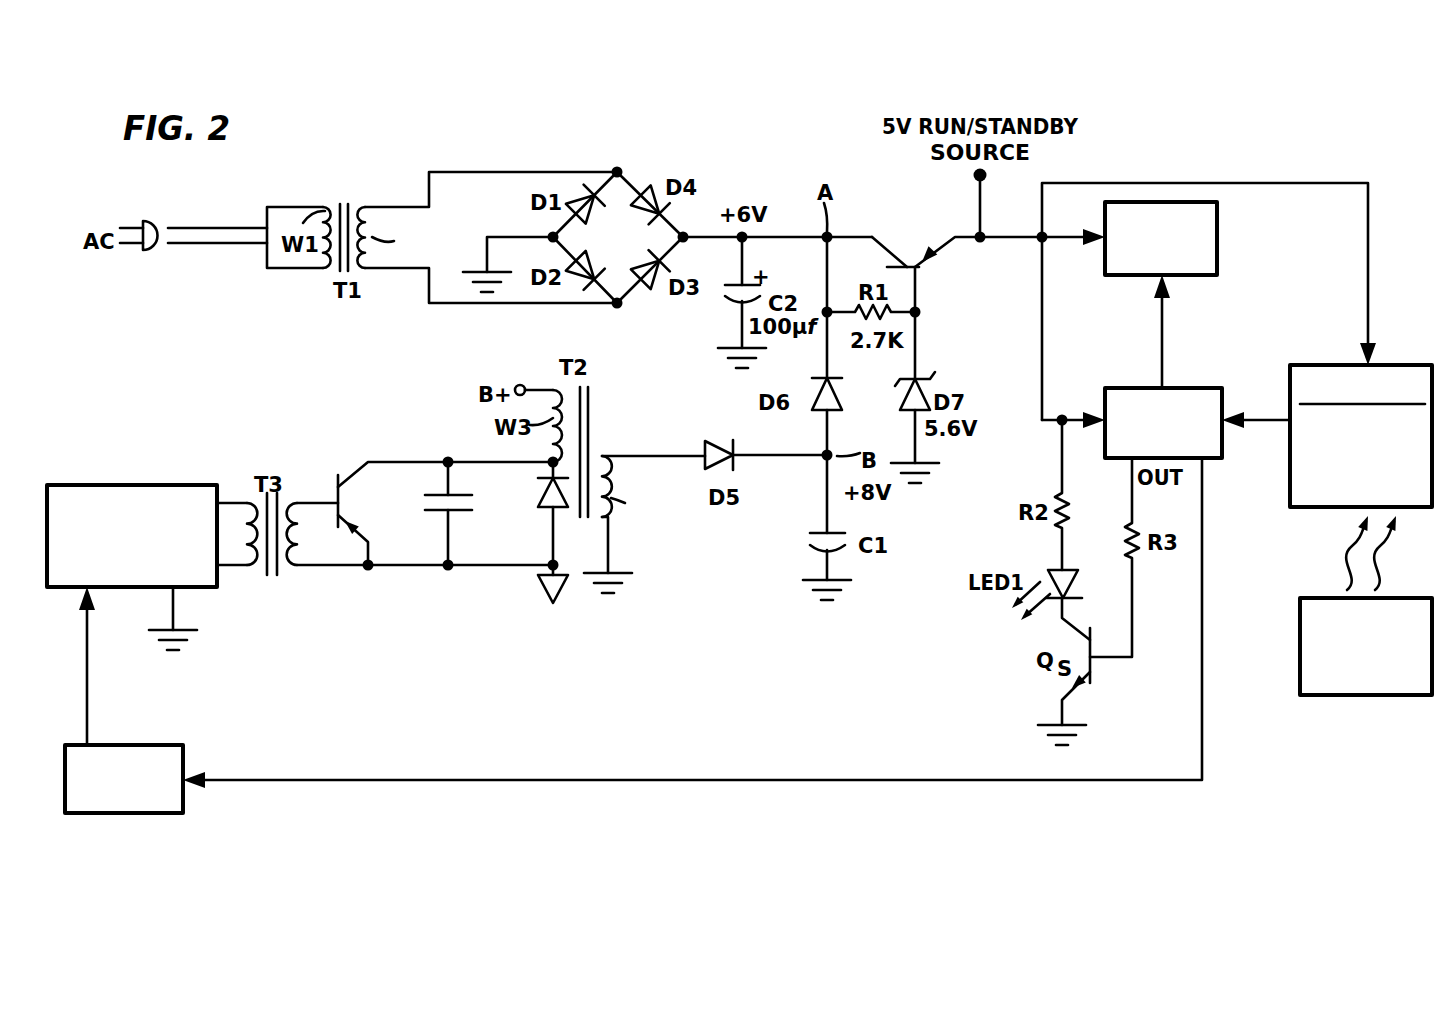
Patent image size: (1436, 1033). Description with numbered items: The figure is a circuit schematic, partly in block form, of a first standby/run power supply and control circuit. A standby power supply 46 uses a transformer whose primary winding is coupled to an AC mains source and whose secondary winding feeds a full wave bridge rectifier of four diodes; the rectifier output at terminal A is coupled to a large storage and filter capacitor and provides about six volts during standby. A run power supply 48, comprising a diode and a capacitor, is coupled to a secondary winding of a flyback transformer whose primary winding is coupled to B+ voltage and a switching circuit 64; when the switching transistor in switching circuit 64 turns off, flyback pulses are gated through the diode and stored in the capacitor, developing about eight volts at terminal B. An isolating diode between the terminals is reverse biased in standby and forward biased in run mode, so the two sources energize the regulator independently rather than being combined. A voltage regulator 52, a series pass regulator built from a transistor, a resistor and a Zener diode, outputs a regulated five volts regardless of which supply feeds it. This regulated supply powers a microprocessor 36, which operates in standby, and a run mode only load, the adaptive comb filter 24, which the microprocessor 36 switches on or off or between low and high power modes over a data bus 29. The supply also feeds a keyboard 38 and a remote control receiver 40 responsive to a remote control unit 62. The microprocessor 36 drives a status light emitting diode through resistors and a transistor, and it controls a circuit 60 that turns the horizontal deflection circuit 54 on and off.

The adaptive comb filter 24 is at (1217, 232).
The data bus 29 is at (1162, 340).
The microprocessor 36 is at (1213, 458).
The keyboard 38 is at (1393, 365).
The remote control receiver 40 is at (1306, 507).
The standby power supply 46 is at (389, 198).
The run power supply 48 is at (668, 465).
The voltage regulator 52 is at (932, 290).
The horizontal deflection circuit 54 is at (138, 485).
The on/off circuit 60 is at (135, 745).
The remote control unit 62 is at (1402, 695).
The switching circuit 64 is at (400, 512).